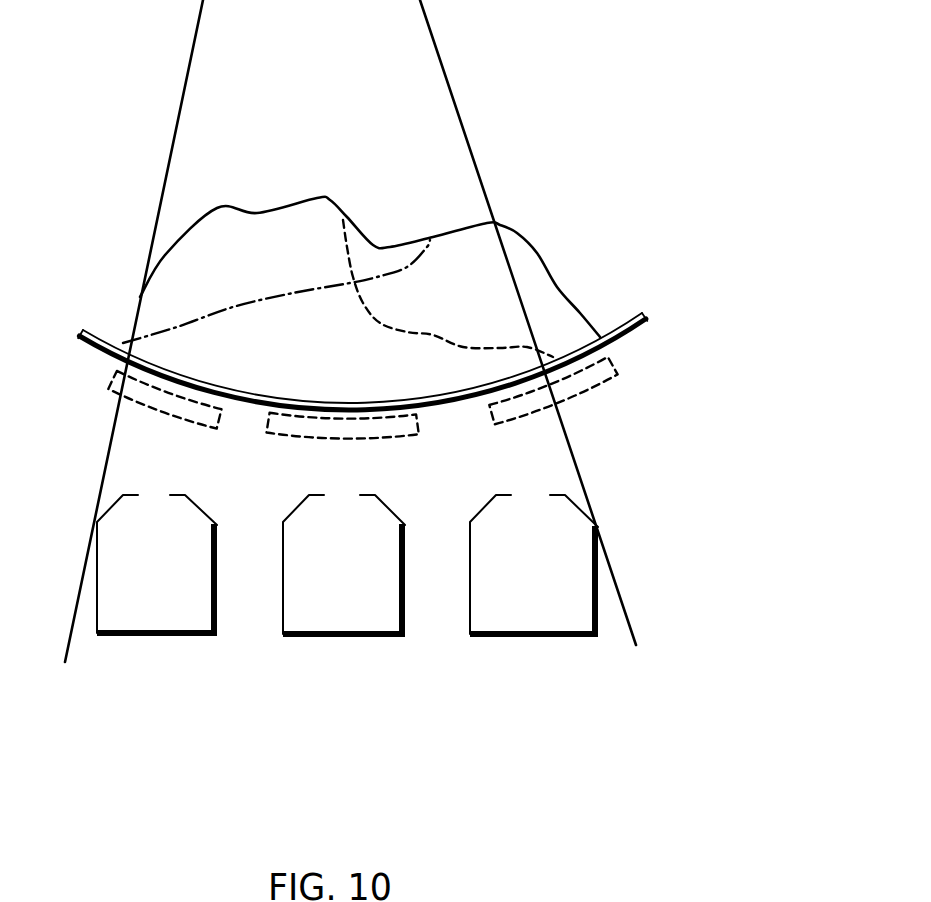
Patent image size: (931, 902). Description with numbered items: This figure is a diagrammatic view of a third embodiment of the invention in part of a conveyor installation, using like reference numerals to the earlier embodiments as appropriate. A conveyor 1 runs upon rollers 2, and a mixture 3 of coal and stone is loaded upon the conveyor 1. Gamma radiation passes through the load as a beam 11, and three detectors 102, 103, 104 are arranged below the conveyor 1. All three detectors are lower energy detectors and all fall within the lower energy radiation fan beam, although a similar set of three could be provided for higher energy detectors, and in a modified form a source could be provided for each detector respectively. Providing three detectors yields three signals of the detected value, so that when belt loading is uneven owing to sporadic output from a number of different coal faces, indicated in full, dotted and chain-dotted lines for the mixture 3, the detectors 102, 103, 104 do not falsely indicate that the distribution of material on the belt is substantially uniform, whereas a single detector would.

The conveyor 1 is at (632, 330).
The rollers 2 is at (170, 398).
The mixture 3 is at (307, 340).
The beam 11 is at (362, 29).
The detector 102 is at (137, 612).
The detector 103 is at (343, 612).
The detector 104 is at (533, 623).